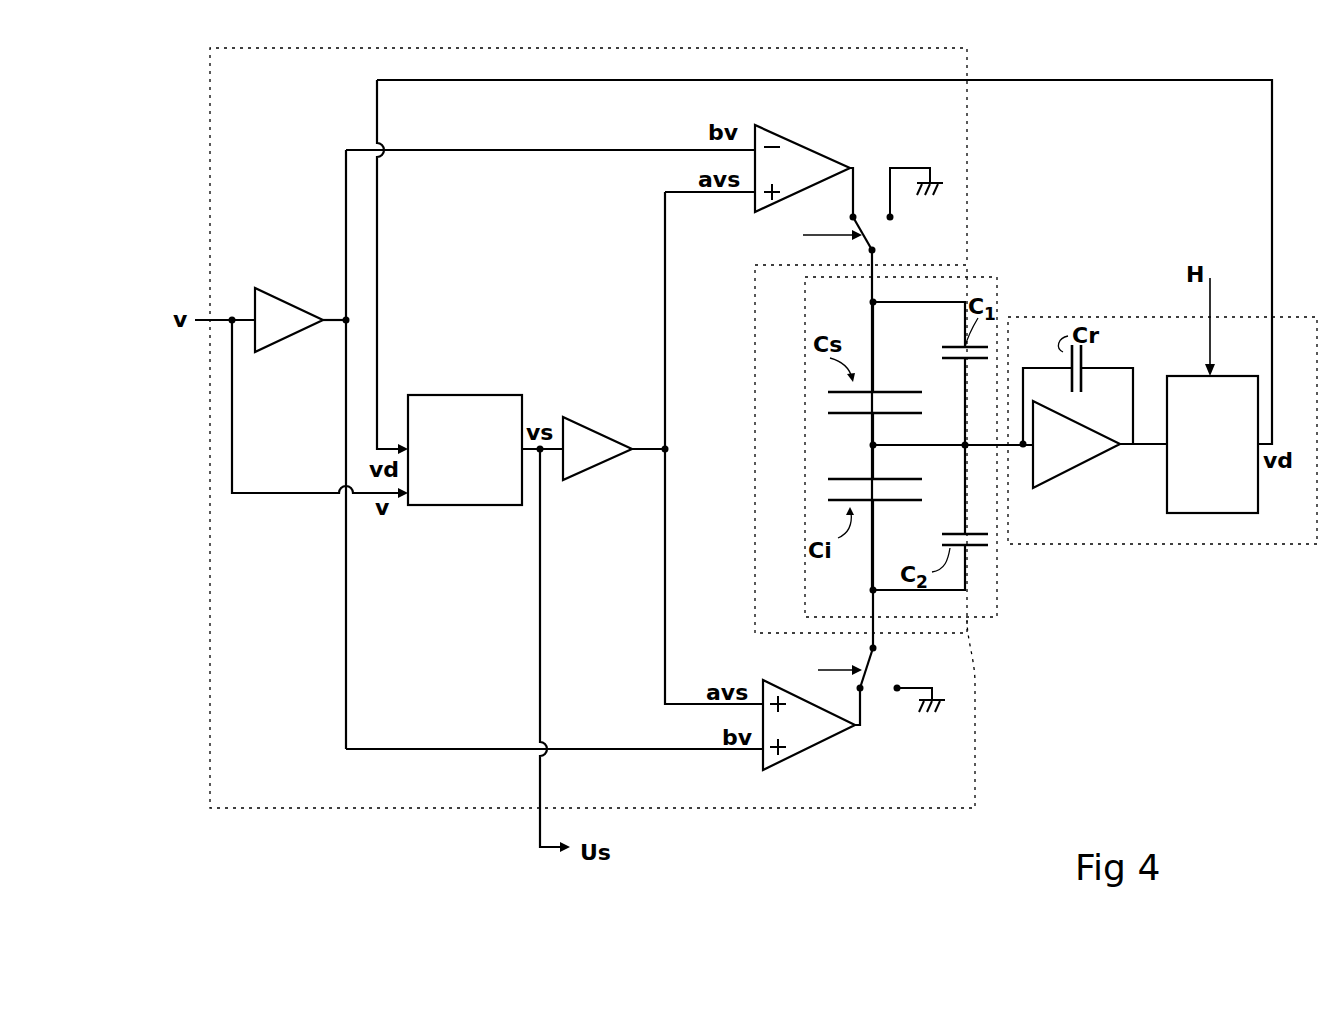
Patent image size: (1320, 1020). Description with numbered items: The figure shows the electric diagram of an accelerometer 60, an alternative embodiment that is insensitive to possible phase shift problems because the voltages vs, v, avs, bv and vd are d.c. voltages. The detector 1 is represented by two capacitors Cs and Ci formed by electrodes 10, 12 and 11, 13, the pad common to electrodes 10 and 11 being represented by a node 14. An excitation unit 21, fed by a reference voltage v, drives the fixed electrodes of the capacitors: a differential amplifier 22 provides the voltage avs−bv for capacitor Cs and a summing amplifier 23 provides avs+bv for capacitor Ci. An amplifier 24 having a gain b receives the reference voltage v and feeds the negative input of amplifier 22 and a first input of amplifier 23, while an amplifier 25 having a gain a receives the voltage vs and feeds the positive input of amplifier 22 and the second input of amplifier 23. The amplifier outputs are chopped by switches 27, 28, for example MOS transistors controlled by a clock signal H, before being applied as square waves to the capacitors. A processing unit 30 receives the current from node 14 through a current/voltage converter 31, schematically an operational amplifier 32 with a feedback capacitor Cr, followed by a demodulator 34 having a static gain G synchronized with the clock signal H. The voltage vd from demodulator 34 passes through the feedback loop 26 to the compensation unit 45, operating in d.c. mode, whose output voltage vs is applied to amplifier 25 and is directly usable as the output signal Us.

The detector 1 is at (890, 633).
The electrode 10 is at (893, 413).
The electrode 11 is at (893, 479).
The electrode 12 is at (893, 392).
The electrode 13 is at (893, 500).
The node 14 is at (873, 445).
The excitation unit 21 is at (975, 748).
The differential amplifier 22 is at (790, 133).
The summing amplifier 23 is at (820, 745).
The amplifier having a gain b 24 is at (265, 290).
The amplifier having a gain a 25 is at (595, 420).
The feedback loop 26 is at (1035, 80).
The switch 27 is at (865, 245).
The switch 28 is at (875, 660).
The processing unit 30 is at (1175, 546).
The current/voltage converter 31 is at (1066, 483).
The operational amplifier 32 is at (1090, 444).
The demodulator 34 is at (1258, 504).
The compensation unit 45 is at (455, 505).
The accelerometer 60 is at (1143, 687).